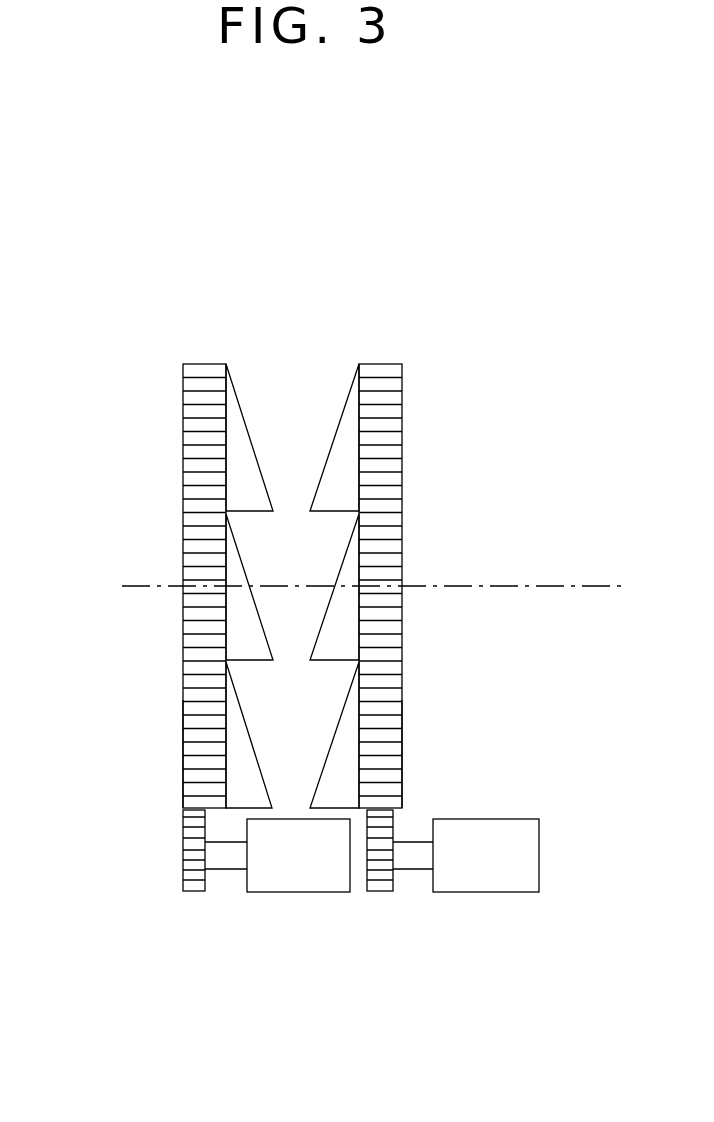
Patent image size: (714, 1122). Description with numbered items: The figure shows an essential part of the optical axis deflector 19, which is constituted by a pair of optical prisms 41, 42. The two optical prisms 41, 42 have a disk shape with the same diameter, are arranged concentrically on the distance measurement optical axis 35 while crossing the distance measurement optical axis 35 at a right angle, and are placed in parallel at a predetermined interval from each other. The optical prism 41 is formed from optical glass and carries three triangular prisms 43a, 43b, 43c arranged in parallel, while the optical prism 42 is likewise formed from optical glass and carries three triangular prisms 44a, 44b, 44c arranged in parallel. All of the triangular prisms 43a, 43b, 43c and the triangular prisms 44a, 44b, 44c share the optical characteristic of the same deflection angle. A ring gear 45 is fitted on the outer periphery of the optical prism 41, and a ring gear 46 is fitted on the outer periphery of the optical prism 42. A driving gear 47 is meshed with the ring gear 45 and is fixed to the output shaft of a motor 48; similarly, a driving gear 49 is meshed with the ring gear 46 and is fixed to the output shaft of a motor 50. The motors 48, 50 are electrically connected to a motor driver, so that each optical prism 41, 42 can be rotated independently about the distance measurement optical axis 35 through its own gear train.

The optical axis deflector 19 is at (294, 149).
The distance measurement optical axis 35 is at (492, 586).
The optical prism 41 is at (402, 782).
The optical prism 42 is at (183, 780).
The triangular prism 43a is at (322, 615).
The triangular prism 43b is at (342, 412).
The triangular prism 43c is at (326, 758).
The triangular prism 44a is at (248, 582).
The triangular prism 44b is at (243, 410).
The triangular prism 44c is at (250, 738).
The ring gear 45 is at (383, 364).
The ring gear 46 is at (200, 364).
The driving gear 47 is at (380, 893).
The motor 48 is at (503, 893).
The driving gear 49 is at (186, 893).
The motor 50 is at (272, 893).